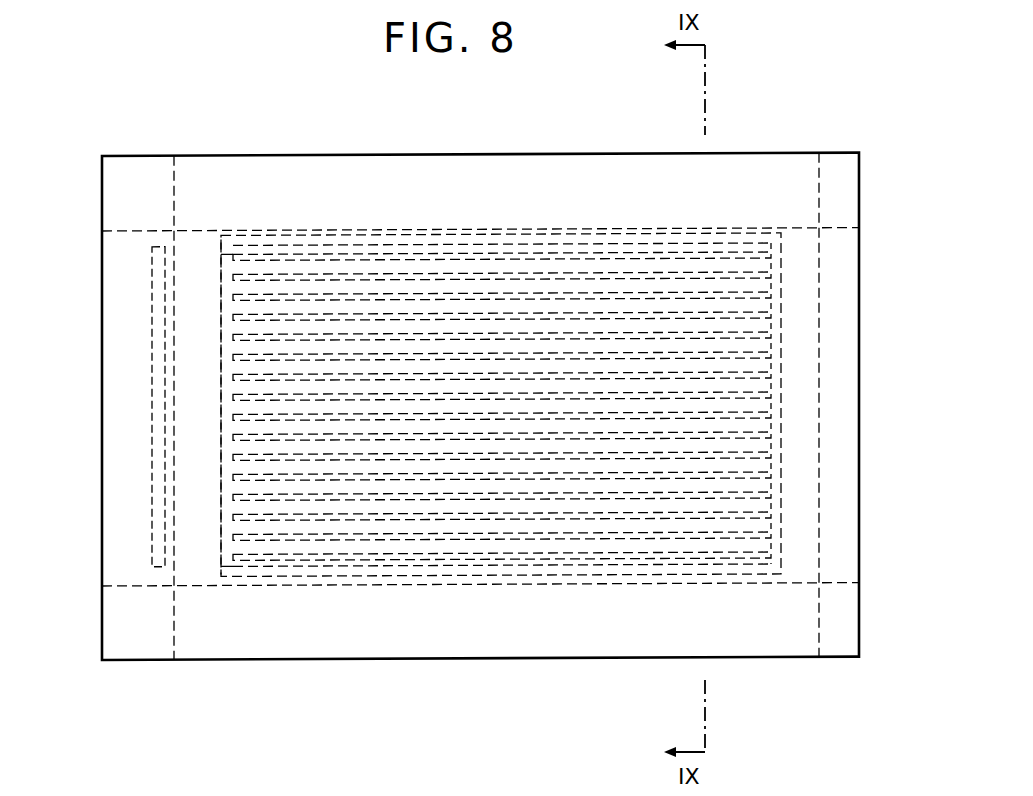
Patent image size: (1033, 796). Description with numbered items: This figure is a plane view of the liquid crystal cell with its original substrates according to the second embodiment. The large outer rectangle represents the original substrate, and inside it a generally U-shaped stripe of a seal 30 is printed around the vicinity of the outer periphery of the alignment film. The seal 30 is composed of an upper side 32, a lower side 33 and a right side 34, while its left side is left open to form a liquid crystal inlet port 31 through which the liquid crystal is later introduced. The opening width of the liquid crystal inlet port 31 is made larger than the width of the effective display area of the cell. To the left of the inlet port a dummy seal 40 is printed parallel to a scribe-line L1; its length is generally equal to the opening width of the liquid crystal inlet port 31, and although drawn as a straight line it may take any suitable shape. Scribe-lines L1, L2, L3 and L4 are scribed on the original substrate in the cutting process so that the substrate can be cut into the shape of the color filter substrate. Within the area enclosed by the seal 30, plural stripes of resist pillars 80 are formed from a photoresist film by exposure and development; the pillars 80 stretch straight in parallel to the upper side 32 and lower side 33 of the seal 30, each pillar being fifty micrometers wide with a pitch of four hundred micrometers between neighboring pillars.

The seal 30 is at (502, 505).
The liquid crystal inlet port 31 is at (233, 566).
The upper side 32 is at (578, 236).
The lower side 33 is at (578, 572).
The right side 34 is at (775, 296).
The dummy seal 40 is at (153, 394).
The resist pillars 80 is at (400, 540).
The scribe-line L1 is at (166, 456).
The scribe-line L2 is at (642, 230).
The scribe-line L3 is at (820, 412).
The scribe-line L4 is at (792, 580).